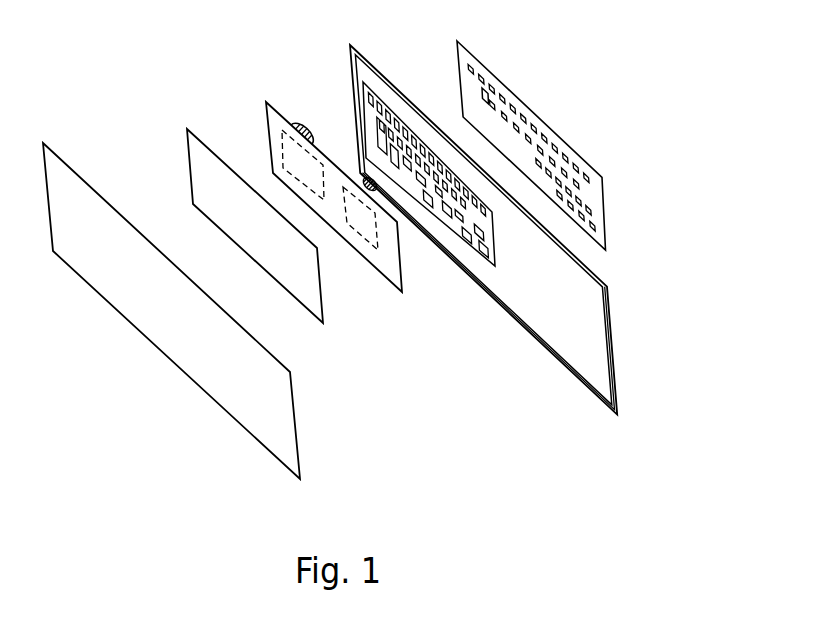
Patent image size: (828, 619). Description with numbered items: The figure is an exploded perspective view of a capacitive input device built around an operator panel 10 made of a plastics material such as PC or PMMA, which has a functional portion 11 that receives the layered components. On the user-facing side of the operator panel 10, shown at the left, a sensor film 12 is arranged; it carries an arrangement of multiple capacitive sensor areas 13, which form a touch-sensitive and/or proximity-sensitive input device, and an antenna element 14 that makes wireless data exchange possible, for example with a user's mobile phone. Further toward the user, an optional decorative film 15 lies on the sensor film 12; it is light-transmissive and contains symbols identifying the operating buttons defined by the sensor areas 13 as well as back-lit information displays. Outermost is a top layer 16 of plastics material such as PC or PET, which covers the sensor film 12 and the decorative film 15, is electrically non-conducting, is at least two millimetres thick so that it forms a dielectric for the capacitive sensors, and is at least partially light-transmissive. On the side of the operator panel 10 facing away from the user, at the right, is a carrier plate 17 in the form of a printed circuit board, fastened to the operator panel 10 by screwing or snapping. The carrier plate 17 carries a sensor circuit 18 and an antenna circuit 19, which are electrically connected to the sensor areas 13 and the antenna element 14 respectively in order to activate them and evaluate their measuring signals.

The operator panel 10 is at (597, 323).
The functional portion 11 is at (352, 88).
The sensor film 12 is at (272, 132).
The capacitive sensor areas 13 is at (303, 163).
The antenna element 14 is at (363, 233).
The decorative film 15 is at (202, 160).
The top layer 16 is at (278, 428).
The carrier plate 17 is at (577, 137).
The sensor circuit 18 is at (487, 98).
The antenna circuit 19 is at (568, 161).